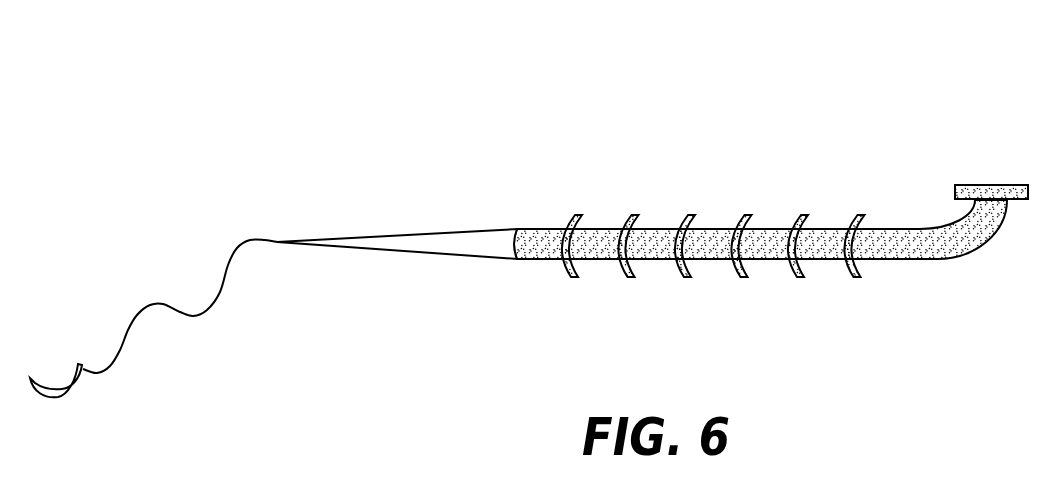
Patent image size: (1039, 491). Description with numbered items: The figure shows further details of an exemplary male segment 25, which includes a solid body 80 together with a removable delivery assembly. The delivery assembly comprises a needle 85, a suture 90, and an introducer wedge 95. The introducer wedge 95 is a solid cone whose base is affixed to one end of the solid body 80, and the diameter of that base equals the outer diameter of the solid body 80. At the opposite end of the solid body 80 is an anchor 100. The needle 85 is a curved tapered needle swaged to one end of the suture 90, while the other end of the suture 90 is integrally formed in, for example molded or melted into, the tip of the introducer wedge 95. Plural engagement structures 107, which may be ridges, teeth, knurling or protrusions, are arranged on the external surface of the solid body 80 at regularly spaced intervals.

The male segment 25 is at (423, 104).
The solid body 80 is at (655, 260).
The needle 85 is at (70, 392).
The suture 90 is at (150, 305).
The introducer wedge 95 is at (465, 255).
The anchor 100 is at (993, 184).
The engagement structure 107 is at (624, 204).